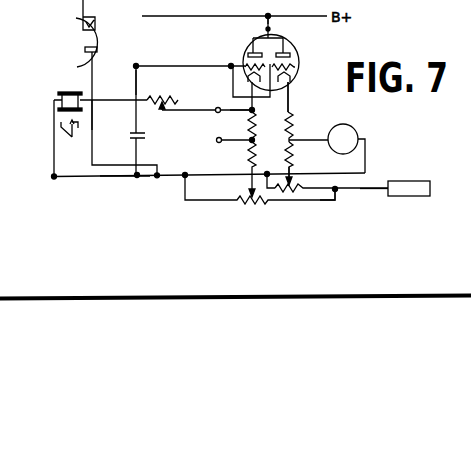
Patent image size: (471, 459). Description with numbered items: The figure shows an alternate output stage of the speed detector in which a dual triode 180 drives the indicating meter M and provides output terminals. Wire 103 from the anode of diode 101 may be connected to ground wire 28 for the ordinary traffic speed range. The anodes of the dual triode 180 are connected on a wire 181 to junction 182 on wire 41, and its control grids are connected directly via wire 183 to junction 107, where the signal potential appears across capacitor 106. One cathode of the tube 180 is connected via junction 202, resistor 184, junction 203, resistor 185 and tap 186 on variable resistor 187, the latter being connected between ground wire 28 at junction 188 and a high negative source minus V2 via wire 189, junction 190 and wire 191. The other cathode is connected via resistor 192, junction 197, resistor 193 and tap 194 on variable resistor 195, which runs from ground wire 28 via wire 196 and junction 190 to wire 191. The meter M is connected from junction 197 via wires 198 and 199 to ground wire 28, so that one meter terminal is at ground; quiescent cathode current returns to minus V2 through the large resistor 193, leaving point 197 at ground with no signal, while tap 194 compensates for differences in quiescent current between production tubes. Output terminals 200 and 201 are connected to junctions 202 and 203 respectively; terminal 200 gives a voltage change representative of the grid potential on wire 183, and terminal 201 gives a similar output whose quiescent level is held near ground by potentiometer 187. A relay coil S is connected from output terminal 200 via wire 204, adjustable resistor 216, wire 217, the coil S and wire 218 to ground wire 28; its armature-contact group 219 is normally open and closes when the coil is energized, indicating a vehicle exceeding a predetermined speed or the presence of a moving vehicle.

The ground wire 28 is at (128, 177).
The wire 41 is at (193, 17).
The diode 101 is at (102, 41).
The wire 103 is at (94, 122).
The capacitor 106 is at (130, 137).
The junction 107 is at (144, 89).
The dual triode 180 is at (300, 54).
The wire 181 is at (273, 28).
The junction 182 is at (263, 20).
The wire 183 is at (180, 66).
The resistor 184 is at (268, 112).
The resistor 185 is at (247, 155).
The tap 186 is at (250, 192).
The variable resistor 187 is at (236, 199).
The junction 188 is at (182, 178).
The wire 189 is at (338, 196).
The junction 190 is at (339, 178).
The wire 191 is at (377, 186).
The resistor 192 is at (292, 111).
The resistor 193 is at (293, 156).
The tap 194 is at (294, 176).
The variable resistor 195 is at (301, 186).
The wire 196 is at (275, 165).
The junction 197 is at (288, 136).
The wire 198 is at (322, 134).
The wire 199 is at (367, 148).
The output terminal 200 is at (216, 113).
The output terminal 201 is at (217, 141).
The junction 202 is at (248, 109).
The junction 203 is at (134, 83).
The wire 204 is at (182, 104).
The adjustable resistor 216 is at (163, 98).
The wire 217 is at (128, 100).
The wire 218 is at (54, 174).
The armature-contact group 219 is at (61, 129).